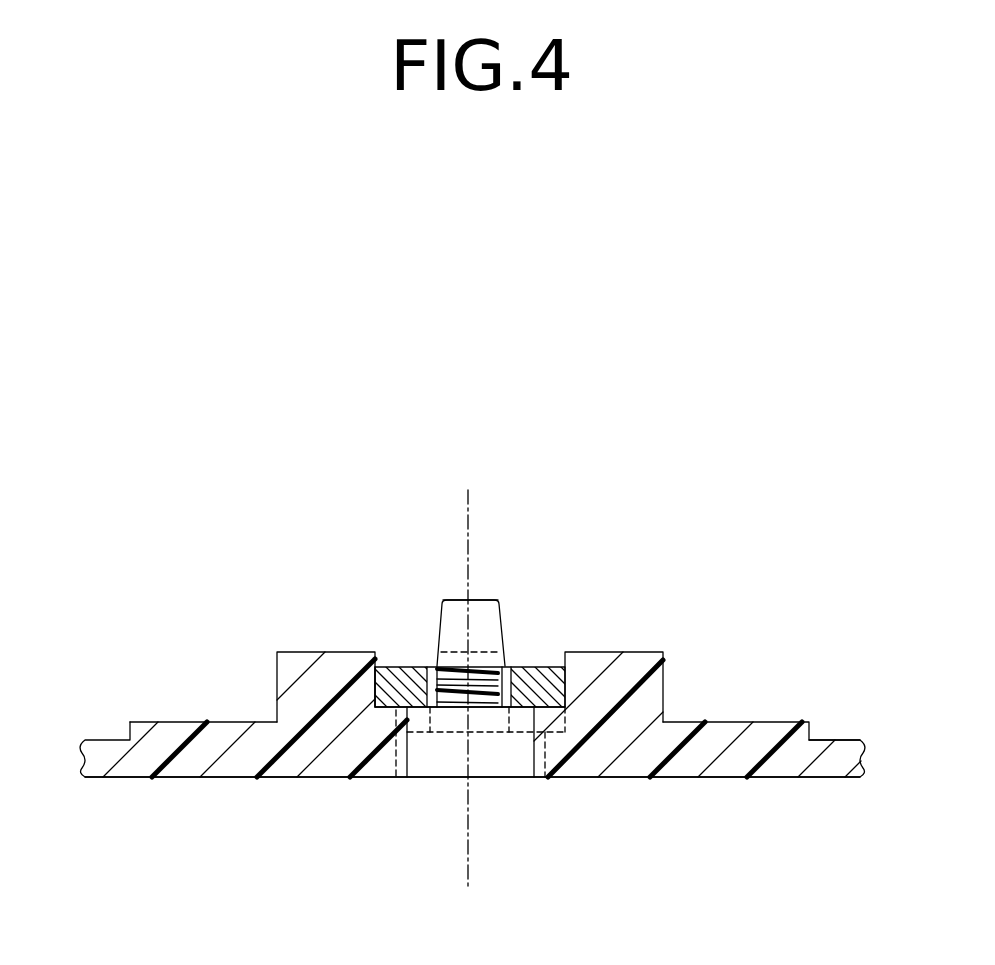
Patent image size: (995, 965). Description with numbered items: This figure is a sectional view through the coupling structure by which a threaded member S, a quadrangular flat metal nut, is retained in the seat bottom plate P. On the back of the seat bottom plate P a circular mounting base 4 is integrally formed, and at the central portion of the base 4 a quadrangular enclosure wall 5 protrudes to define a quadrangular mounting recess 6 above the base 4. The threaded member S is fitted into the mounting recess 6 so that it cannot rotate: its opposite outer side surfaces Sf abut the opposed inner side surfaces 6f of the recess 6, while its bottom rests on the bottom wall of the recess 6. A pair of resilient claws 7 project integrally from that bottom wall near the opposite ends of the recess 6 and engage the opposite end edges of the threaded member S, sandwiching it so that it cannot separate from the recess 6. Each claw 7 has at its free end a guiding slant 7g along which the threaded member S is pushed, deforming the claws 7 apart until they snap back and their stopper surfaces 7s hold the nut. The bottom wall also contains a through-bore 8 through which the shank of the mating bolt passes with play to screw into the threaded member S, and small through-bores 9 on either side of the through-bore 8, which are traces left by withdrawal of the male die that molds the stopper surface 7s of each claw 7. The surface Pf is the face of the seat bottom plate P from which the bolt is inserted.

The seat bottom plate P is at (165, 708).
The plate bottom face Pf is at (567, 778).
The mounting base 4 is at (808, 722).
The enclosure wall 5 is at (662, 651).
The mounting recess 6 is at (542, 686).
The inner side surfaces of the recess 6f is at (393, 712).
The threaded member S is at (399, 648).
The outer side surfaces of the threaded member Sf is at (378, 690).
The resilient claw 7 is at (482, 588).
The guiding slant 7g is at (457, 610).
The stopper surface 7s is at (509, 676).
The through-bore 8 is at (534, 757).
The small through-bore 9 is at (419, 757).